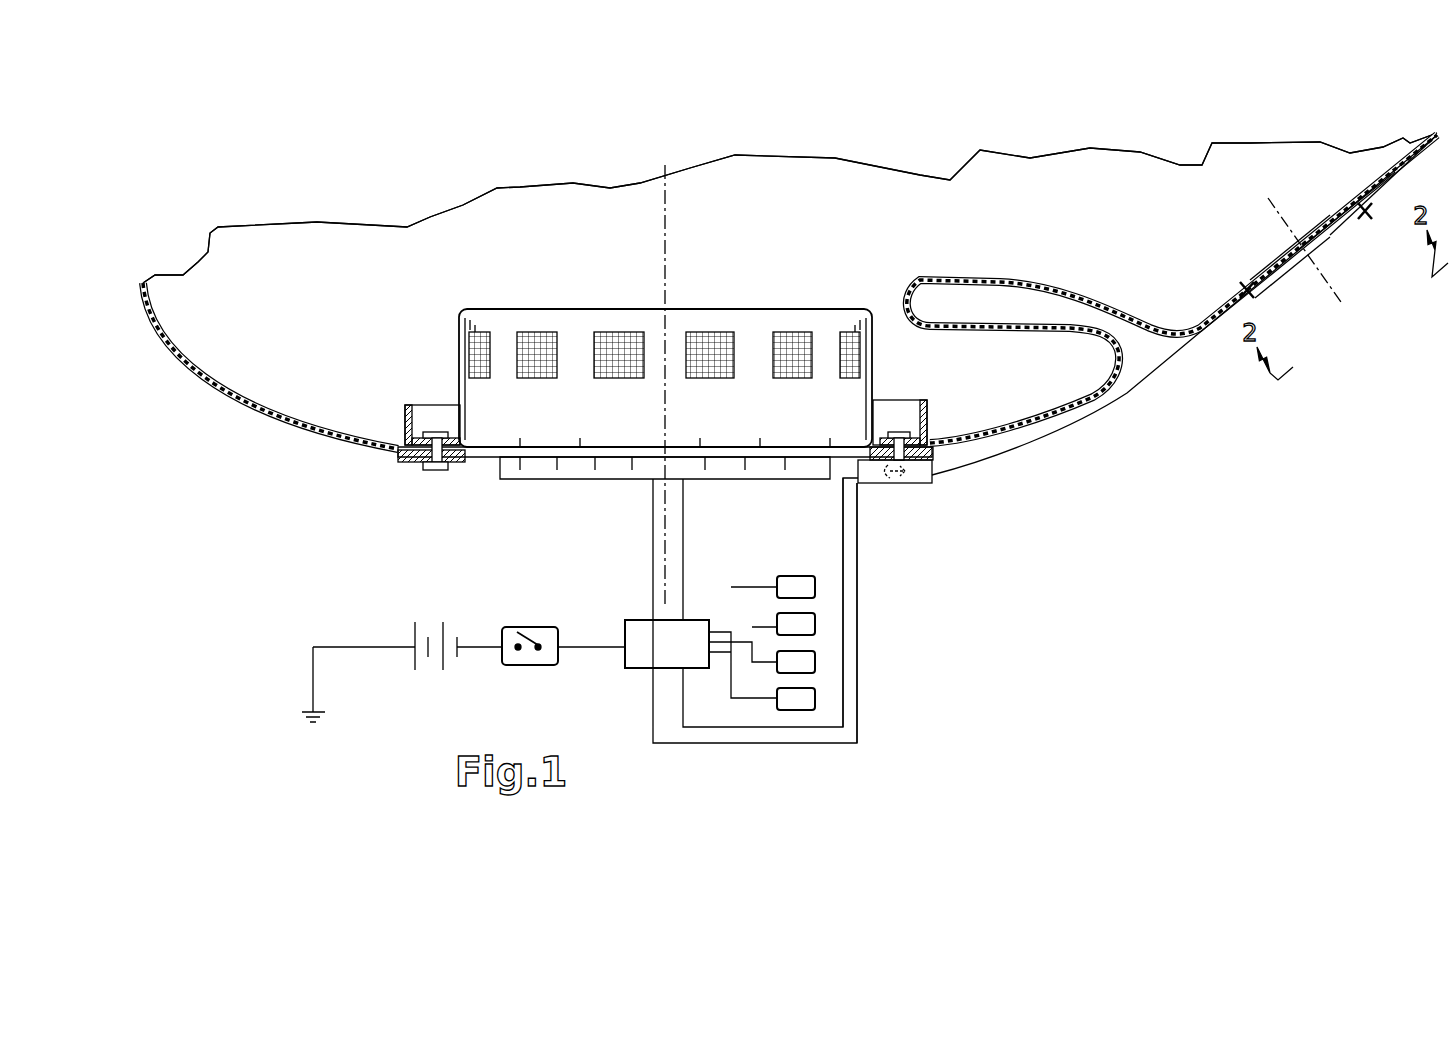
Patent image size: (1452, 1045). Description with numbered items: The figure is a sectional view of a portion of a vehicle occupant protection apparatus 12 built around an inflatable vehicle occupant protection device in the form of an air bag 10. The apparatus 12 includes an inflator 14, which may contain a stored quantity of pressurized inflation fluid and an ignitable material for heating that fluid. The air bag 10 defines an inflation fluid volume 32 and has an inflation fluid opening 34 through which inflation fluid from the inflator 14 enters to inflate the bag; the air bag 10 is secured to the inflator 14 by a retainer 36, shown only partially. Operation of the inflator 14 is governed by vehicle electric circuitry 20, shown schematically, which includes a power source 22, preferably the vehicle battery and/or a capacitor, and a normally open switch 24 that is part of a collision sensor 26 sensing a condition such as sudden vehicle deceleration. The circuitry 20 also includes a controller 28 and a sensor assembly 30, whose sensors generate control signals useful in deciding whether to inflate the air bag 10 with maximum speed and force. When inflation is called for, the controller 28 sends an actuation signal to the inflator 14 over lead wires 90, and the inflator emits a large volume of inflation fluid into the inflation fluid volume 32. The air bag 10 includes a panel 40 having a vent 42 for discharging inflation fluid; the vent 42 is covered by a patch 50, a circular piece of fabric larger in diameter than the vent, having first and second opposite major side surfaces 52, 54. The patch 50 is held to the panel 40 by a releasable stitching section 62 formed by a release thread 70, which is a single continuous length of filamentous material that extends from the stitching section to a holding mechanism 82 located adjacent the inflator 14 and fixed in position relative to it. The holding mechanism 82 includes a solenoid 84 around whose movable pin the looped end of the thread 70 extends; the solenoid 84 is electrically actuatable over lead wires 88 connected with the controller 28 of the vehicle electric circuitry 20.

The air bag 10 is at (327, 217).
The vehicle occupant protection apparatus 12 is at (398, 172).
The inflator 14 is at (572, 305).
The vehicle electric circuitry 20 is at (602, 630).
The power source 22 is at (414, 633).
The normally open switch 24 is at (528, 633).
The collision sensor 26 is at (512, 667).
The controller 28 is at (638, 670).
The sensor assembly 30 is at (815, 593).
The inflation fluid volume 32 is at (301, 329).
The inflation fluid opening 34 is at (455, 446).
The retainer 36 is at (405, 423).
The panel 40 is at (1053, 287).
The vent 42 is at (1327, 230).
The patch 50 is at (1337, 243).
The first major side surface 52 is at (1293, 260).
The second major side surface 54 is at (1278, 267).
The releasable stitching section 62 is at (1240, 283).
The release thread 70 is at (1128, 395).
The holding mechanism 82 is at (927, 485).
The solenoid 84 is at (917, 485).
The lead wires 88 is at (845, 577).
The lead wires 90 is at (653, 532).